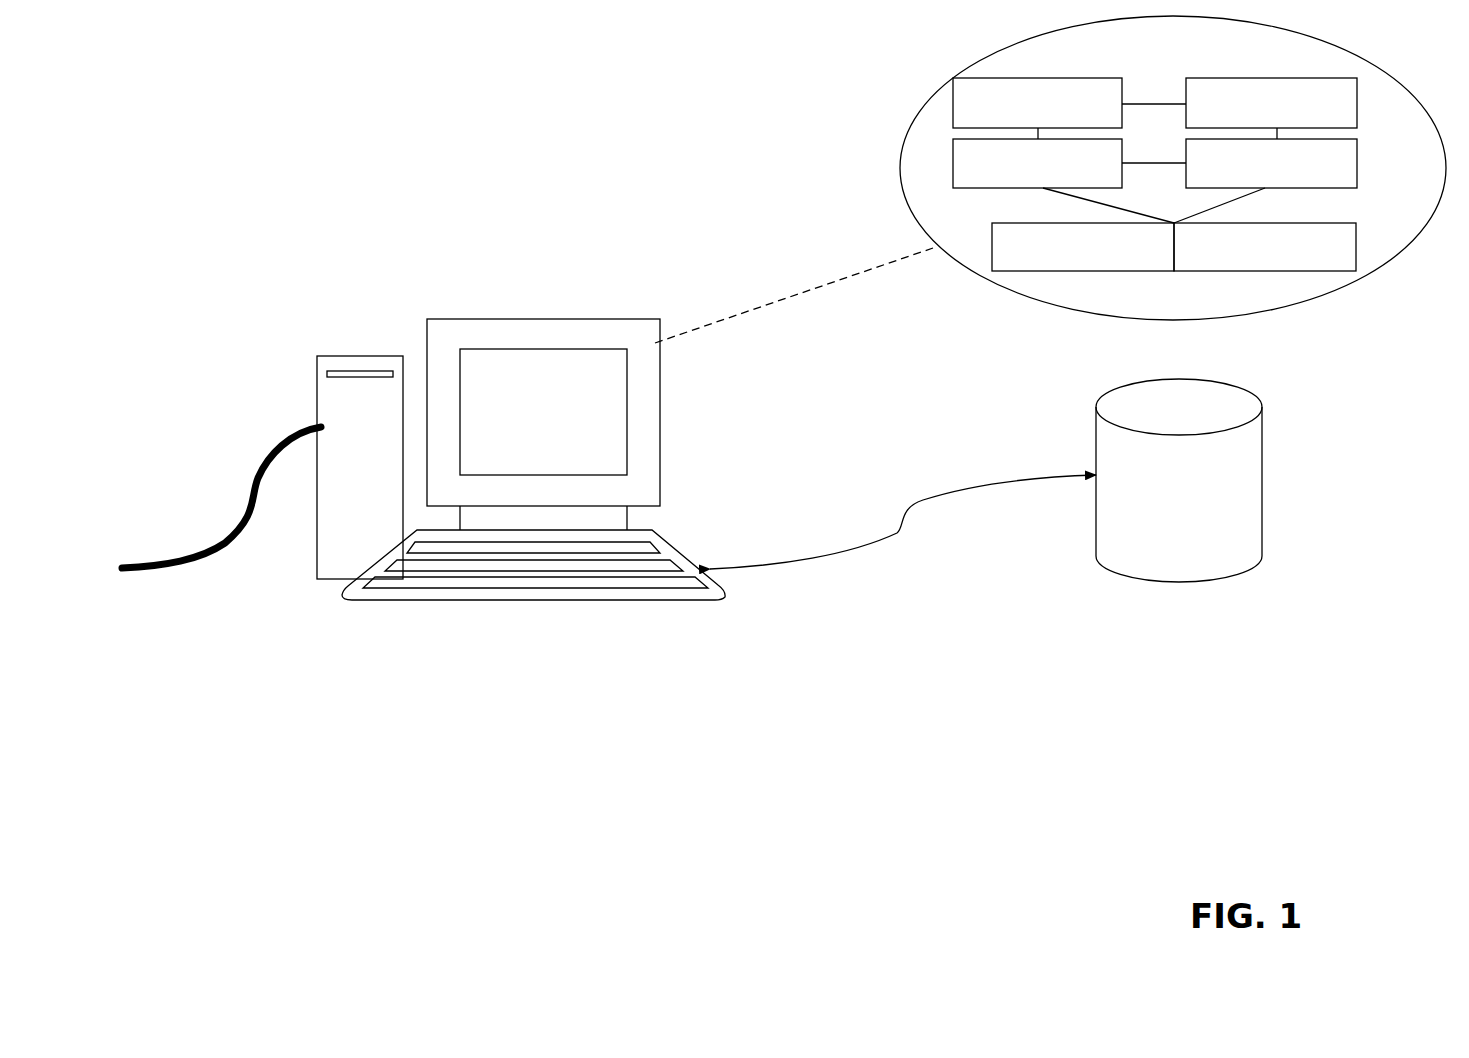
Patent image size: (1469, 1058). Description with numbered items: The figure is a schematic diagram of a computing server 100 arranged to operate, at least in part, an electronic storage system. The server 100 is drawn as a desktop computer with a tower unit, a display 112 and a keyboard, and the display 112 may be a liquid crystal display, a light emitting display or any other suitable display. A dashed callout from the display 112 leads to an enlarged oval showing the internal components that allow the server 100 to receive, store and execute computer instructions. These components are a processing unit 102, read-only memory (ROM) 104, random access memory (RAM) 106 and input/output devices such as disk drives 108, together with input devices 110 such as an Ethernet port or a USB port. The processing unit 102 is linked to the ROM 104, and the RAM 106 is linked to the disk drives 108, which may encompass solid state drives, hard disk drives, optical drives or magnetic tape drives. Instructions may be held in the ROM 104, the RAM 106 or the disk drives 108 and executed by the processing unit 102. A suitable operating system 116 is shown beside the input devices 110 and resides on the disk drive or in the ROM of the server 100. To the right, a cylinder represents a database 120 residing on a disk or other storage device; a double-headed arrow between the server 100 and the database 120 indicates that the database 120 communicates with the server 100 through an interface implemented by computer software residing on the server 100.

The computing server 100 is at (527, 484).
The processing unit 102 is at (1037, 103).
The read-only memory (ROM) 104 is at (1271, 103).
The random access memory (RAM) 106 is at (1037, 163).
The disk drives 108 is at (1271, 163).
The input devices 110 is at (1083, 247).
The operating system 116 is at (1265, 247).
The display 112 is at (549, 303).
The database 120 is at (986, 480).